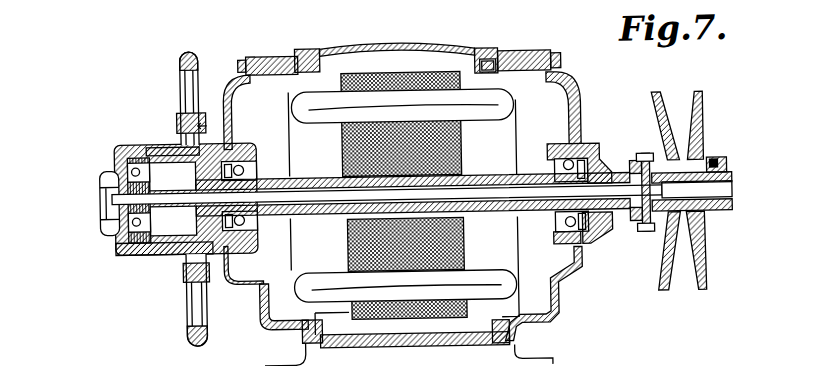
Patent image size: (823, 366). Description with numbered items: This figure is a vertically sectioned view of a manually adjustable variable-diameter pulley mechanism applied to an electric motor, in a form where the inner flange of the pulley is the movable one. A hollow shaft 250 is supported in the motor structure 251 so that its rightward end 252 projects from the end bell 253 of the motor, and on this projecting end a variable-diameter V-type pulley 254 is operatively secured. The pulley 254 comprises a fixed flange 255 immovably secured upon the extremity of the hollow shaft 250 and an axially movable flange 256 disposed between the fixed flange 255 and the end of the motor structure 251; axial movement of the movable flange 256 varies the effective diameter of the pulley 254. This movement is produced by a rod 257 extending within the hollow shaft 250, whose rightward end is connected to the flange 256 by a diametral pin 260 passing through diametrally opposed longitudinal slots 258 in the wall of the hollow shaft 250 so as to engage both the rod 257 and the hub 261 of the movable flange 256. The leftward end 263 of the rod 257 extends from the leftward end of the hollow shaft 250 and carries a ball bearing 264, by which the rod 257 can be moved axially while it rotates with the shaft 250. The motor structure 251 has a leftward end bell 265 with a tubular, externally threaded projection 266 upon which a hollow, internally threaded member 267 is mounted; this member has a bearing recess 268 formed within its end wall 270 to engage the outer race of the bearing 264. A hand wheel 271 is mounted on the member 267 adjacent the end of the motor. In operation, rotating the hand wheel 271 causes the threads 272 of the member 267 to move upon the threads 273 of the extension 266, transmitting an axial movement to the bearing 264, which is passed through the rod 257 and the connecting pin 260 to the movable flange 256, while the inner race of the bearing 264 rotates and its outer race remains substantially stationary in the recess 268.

The hollow shaft 250 is at (500, 214).
The motor structure 251 is at (496, 58).
The rightward end 252 is at (613, 220).
The end bell 253 is at (574, 99).
The variable-diameter V-type pulley 254 is at (670, 188).
The fixed flange 255 is at (700, 111).
The axially movable flange 256 is at (657, 117).
The rod 257 is at (533, 176).
The longitudinal slots 258 is at (676, 250).
The pin 260 is at (640, 232).
The hub 261 is at (636, 164).
The leftward end 263 is at (111, 197).
The bearing 264 is at (116, 229).
The leftward end bell 265 is at (233, 92).
The tubular externally threaded projection 266 is at (172, 176).
The internally threaded member 267 is at (148, 252).
The bearing recess 268 is at (124, 166).
The end wall 270 is at (118, 141).
The hand wheel 271 is at (184, 58).
The threads 272 is at (151, 145).
The threads 273 is at (173, 221).